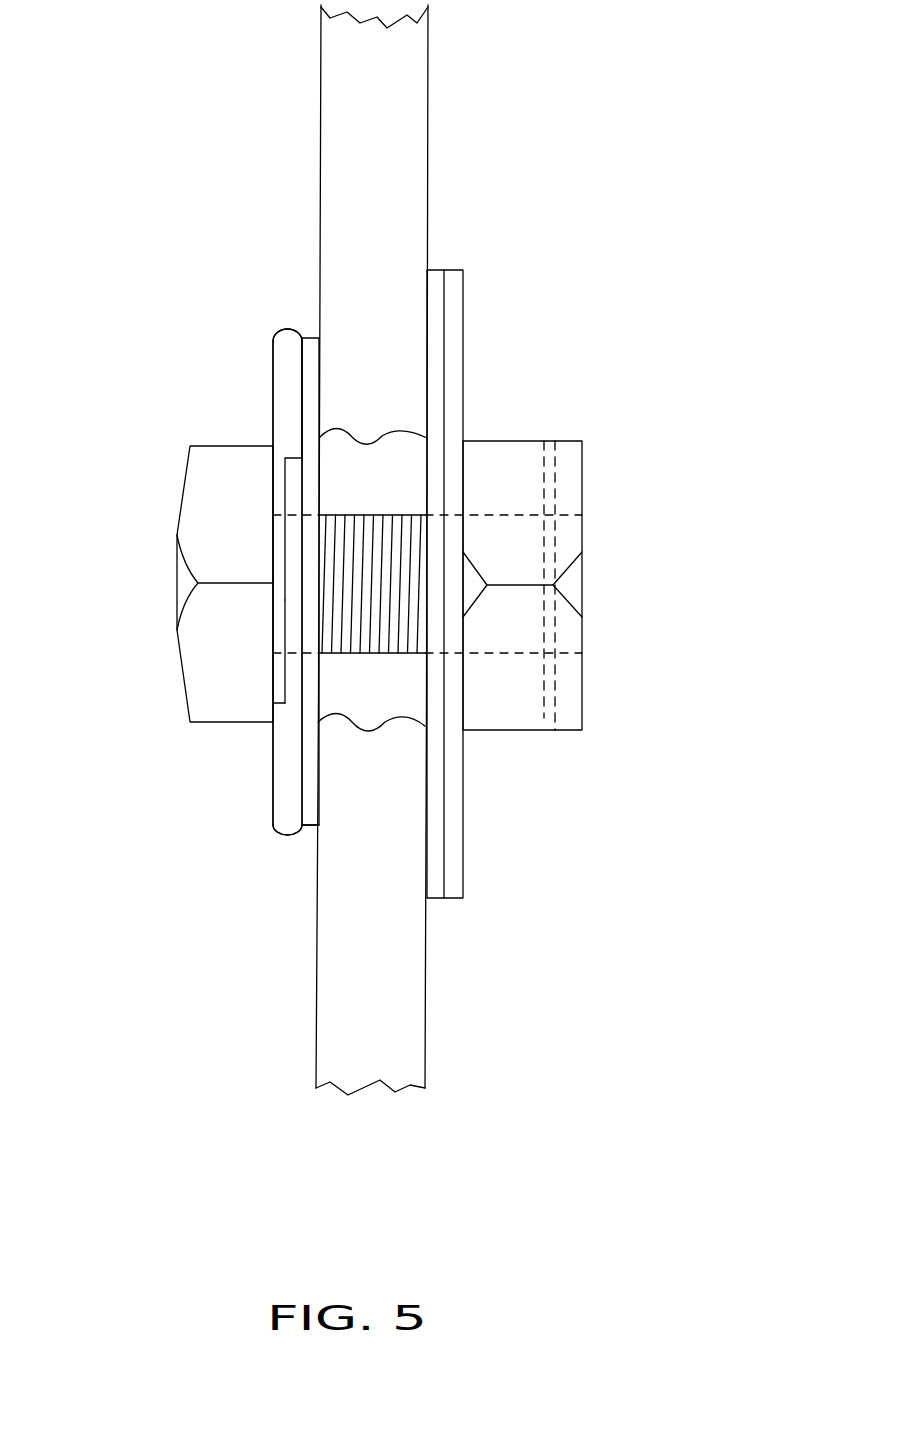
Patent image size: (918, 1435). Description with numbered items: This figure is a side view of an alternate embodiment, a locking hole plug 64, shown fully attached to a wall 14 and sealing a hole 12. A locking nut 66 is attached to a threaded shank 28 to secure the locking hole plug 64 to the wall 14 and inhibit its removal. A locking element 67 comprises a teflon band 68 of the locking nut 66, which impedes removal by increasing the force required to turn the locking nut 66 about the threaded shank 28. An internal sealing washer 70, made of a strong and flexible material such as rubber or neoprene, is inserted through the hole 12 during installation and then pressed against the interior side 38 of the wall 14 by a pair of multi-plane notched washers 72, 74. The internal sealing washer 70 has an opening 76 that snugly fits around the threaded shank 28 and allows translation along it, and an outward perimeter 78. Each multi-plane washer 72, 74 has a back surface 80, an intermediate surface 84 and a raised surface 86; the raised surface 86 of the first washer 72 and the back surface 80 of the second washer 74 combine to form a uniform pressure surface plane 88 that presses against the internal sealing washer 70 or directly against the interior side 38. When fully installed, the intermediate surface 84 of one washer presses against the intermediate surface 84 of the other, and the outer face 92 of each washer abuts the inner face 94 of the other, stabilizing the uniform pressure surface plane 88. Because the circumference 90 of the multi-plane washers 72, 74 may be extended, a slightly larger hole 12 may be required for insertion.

The hole 12 is at (372, 698).
The wall 14 is at (321, 82).
The threaded shank 28 is at (582, 542).
The interior side 38 is at (316, 1038).
The locking hole plug 64 is at (157, 433).
The locking nut 66 is at (582, 695).
The locking element 67 is at (588, 485).
The teflon band 68 is at (550, 441).
The internal sealing washer 70 is at (310, 335).
The multi-plane washer 72 is at (273, 333).
The multi-plane washer 74 is at (282, 837).
The opening 76 is at (317, 655).
The outward perimeter 78 is at (308, 828).
The back surface 80 is at (273, 398).
The intermediate surface 84 is at (288, 470).
The raised surface 86 is at (303, 377).
The uniform pressure surface plane 88 is at (303, 430).
The circumference 90 is at (285, 327).
The outer face 92 is at (278, 700).
The inner face 94 is at (283, 690).